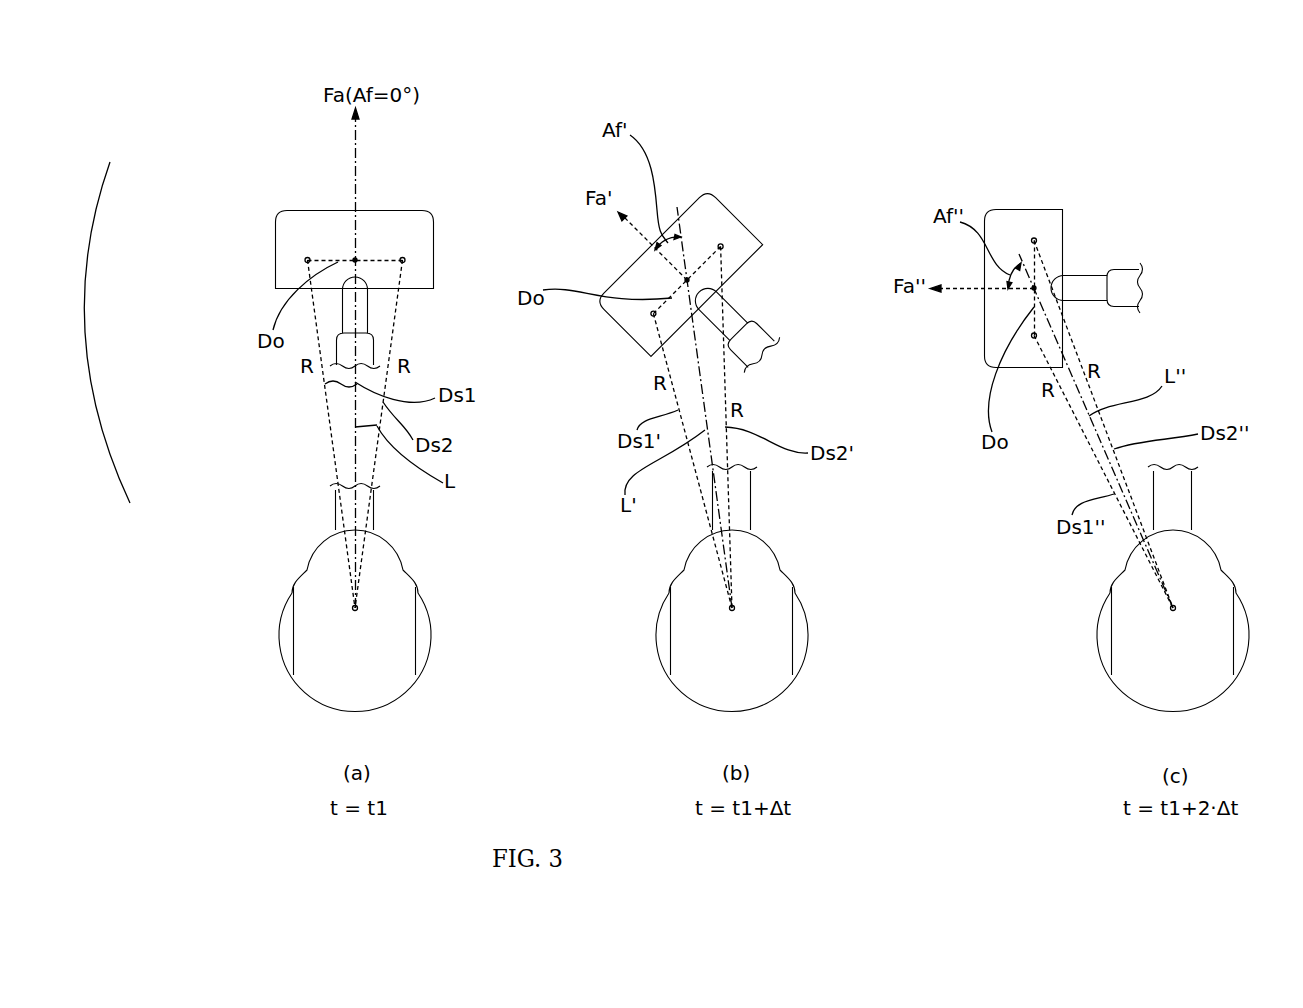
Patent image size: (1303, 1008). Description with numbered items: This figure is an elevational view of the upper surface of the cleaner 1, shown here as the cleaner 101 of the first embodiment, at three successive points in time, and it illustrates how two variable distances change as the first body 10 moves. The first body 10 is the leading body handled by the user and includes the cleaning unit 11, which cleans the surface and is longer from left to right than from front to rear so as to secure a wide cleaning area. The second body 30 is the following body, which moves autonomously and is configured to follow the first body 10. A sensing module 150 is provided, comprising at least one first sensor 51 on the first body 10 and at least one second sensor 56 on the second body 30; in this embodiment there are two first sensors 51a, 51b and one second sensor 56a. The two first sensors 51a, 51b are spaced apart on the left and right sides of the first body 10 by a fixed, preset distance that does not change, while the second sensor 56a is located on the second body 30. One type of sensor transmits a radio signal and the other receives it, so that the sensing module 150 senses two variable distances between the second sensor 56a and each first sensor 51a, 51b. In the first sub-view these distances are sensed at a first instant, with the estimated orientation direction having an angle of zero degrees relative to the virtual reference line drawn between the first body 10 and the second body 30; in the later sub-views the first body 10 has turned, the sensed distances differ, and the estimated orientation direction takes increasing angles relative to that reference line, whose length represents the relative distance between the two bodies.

The cleaner 101 is at (181, 64).
The cleaner 1 is at (198, 64).
The first body 10 is at (388, 192).
The cleaning unit 11 is at (335, 225).
The second body 30 is at (382, 642).
The first sensor 51 is at (158, 143).
The first sensor 51a is at (307, 260).
The first sensor 51b is at (402, 260).
The second sensor 56 is at (355, 608).
The second sensor 56a is at (652, 552).
The sensing module 150 is at (87, 332).